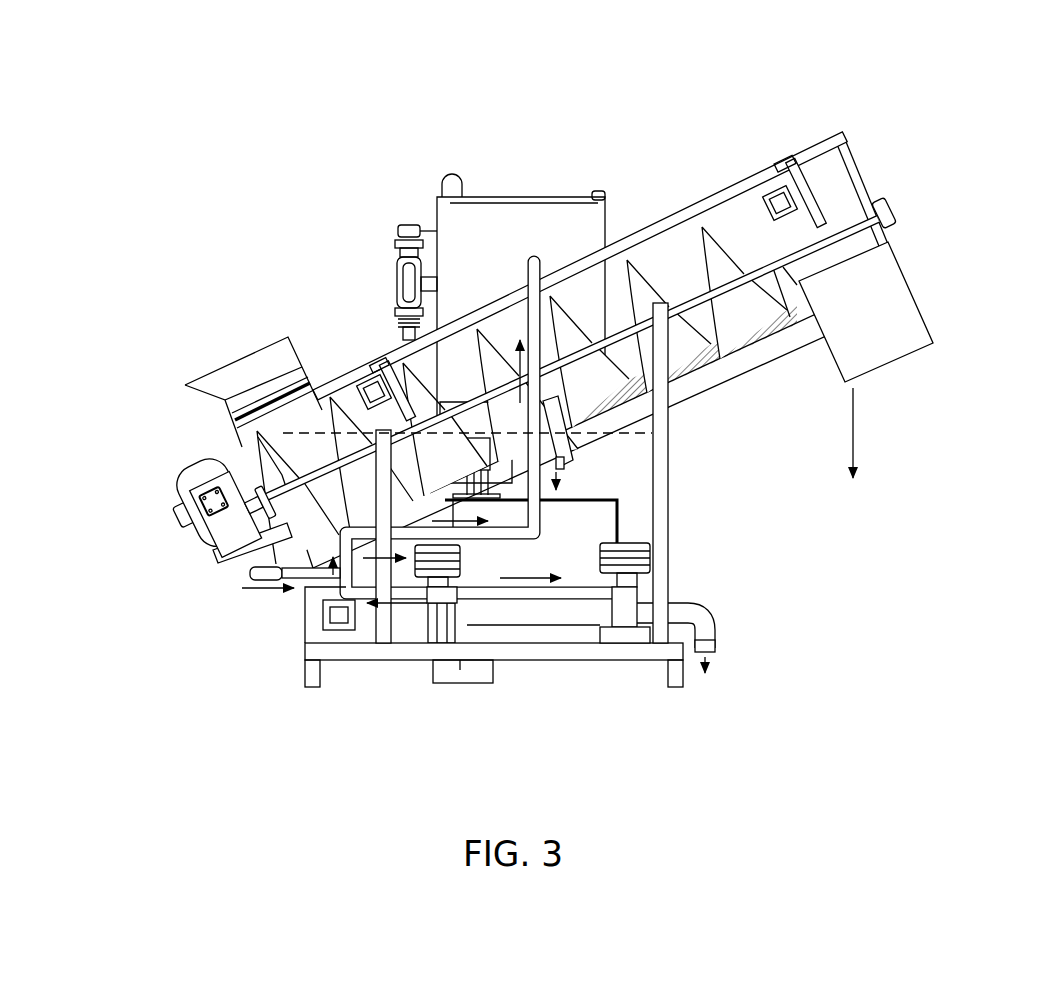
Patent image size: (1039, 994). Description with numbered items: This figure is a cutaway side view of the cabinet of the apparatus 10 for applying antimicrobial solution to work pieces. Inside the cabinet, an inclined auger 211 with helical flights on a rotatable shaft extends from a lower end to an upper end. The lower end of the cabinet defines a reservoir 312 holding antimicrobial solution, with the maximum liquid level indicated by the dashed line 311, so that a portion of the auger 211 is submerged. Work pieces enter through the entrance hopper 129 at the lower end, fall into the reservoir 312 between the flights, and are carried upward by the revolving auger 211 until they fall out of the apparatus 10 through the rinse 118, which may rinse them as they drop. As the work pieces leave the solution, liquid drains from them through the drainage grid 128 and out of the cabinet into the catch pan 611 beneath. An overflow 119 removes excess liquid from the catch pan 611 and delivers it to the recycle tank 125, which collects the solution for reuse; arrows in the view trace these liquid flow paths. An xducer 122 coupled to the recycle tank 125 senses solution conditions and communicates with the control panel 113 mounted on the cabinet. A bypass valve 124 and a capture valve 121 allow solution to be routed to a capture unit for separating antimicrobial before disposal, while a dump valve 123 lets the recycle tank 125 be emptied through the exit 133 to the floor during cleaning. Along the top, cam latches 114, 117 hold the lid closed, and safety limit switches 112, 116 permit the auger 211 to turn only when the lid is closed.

The apparatus 10 is at (190, 127).
The safety limit switch 112 is at (368, 378).
The control panel 113 is at (559, 197).
The cam latch 114 is at (395, 388).
The safety limit switch 116 is at (776, 190).
The cam latch 117 is at (797, 156).
The rinse 118 is at (893, 313).
The overflow 119 is at (575, 482).
The capture valve 121 is at (640, 551).
The xducer 122 is at (624, 598).
The dump valve 123 is at (647, 613).
The bypass valve 124 is at (433, 565).
The recycle tank 125 is at (617, 500).
The drainage grid 128 is at (748, 330).
The entrance hopper 129 is at (234, 363).
The exit 133 is at (716, 646).
The auger 211 is at (633, 246).
The dashed line 311 is at (280, 447).
The reservoir 312 is at (190, 479).
The catch pan 611 is at (722, 388).